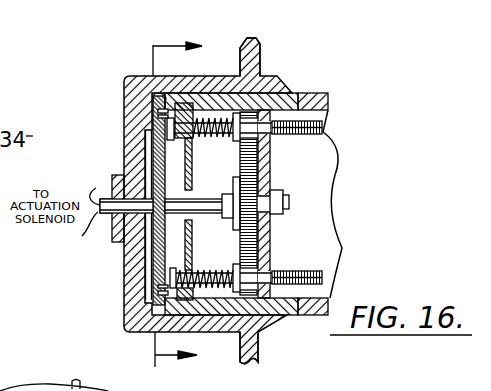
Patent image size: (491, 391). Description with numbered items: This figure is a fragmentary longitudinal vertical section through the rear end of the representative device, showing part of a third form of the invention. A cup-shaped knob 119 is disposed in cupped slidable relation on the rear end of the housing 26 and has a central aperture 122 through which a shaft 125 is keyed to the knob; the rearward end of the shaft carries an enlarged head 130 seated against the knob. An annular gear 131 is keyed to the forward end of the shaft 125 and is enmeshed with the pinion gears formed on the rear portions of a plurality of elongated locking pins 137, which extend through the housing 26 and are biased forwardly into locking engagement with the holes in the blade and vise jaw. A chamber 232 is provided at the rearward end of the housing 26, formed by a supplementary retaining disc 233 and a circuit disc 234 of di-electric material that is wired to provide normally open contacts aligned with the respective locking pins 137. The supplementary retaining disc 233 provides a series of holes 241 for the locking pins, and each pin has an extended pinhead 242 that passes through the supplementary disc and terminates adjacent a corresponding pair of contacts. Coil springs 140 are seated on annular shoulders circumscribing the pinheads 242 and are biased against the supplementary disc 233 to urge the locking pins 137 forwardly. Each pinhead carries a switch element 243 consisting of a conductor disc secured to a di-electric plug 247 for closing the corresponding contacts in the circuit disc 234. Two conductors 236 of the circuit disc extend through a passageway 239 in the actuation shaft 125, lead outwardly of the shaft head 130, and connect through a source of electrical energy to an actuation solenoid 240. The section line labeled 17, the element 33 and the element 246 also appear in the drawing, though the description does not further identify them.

The section line 17 is at (165, 193).
The housing 26 is at (320, 93).
The mounting plate 33 is at (199, 302).
The cup-shaped knob 119 is at (120, 293).
The central aperture 122 is at (123, 180).
The shaft 125 is at (236, 180).
The enlarged head 130 is at (143, 214).
The annular gear 131 is at (272, 236).
The locking pins 137 is at (315, 134).
The compression springs 140 is at (256, 72).
The chamber 232 is at (157, 95).
The supplementary retaining disc 233 is at (255, 152).
The circuit disc 234 is at (157, 254).
The conductors 236 is at (118, 234).
The passageway 239 is at (106, 199).
The actuation solenoid 240 is at (6, 388).
The holes 241 is at (184, 262).
The extended pinhead 242 is at (233, 112).
The switch element 243 is at (162, 113).
The pin 246 is at (164, 118).
The di-electric plug 247 is at (172, 115).